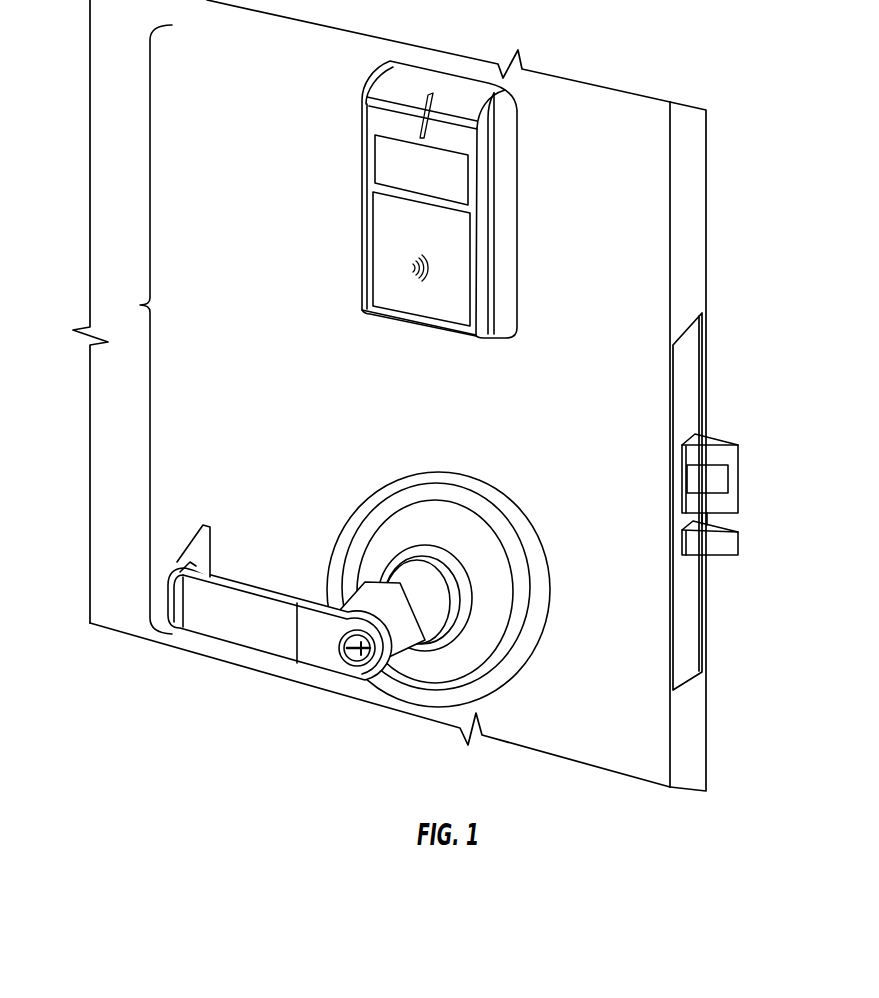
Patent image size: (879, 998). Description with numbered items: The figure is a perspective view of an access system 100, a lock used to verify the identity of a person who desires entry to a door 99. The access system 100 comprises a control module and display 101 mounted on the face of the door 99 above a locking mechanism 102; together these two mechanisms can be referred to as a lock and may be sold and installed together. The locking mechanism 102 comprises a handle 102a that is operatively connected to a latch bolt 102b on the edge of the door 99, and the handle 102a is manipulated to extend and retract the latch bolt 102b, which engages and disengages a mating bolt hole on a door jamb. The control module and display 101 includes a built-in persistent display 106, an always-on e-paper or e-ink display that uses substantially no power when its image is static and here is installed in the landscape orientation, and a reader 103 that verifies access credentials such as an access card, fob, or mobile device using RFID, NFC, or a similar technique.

The door 99 is at (687, 217).
The access system 100 is at (134, 329).
The control module and display 101 is at (382, 319).
The locking mechanism 102 is at (548, 573).
The handle 102a is at (245, 622).
The latch bolt 102b is at (727, 430).
The reader 103 is at (385, 242).
The persistent display 106 is at (385, 167).